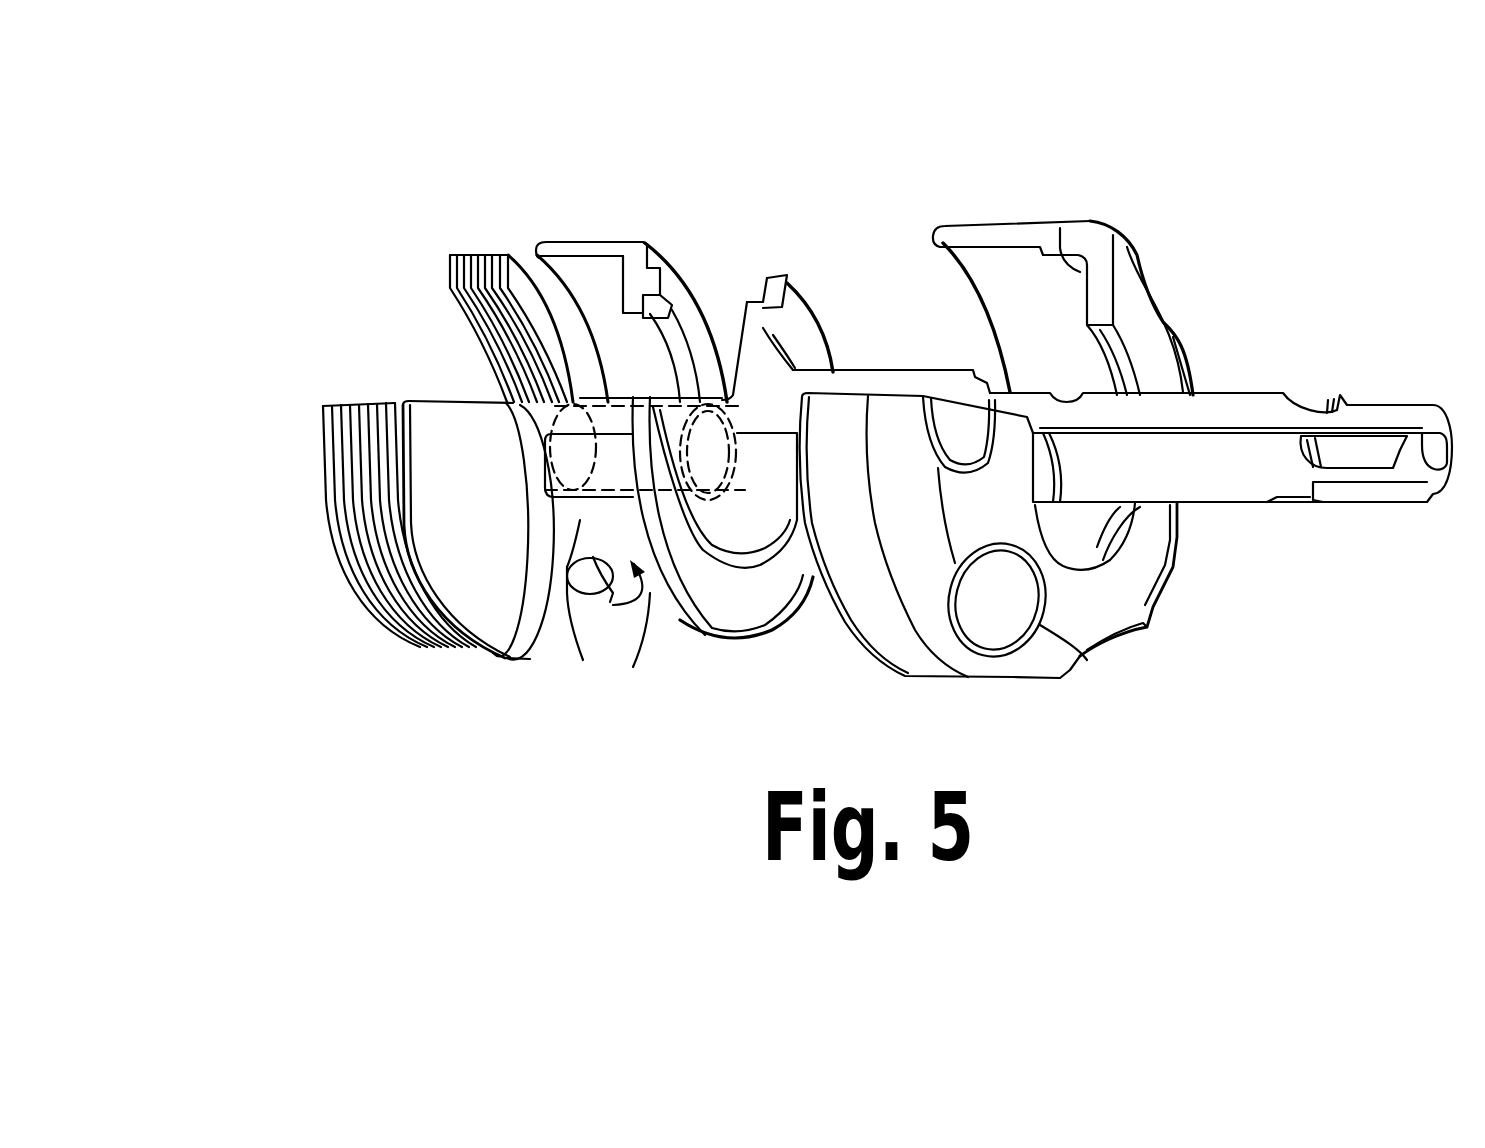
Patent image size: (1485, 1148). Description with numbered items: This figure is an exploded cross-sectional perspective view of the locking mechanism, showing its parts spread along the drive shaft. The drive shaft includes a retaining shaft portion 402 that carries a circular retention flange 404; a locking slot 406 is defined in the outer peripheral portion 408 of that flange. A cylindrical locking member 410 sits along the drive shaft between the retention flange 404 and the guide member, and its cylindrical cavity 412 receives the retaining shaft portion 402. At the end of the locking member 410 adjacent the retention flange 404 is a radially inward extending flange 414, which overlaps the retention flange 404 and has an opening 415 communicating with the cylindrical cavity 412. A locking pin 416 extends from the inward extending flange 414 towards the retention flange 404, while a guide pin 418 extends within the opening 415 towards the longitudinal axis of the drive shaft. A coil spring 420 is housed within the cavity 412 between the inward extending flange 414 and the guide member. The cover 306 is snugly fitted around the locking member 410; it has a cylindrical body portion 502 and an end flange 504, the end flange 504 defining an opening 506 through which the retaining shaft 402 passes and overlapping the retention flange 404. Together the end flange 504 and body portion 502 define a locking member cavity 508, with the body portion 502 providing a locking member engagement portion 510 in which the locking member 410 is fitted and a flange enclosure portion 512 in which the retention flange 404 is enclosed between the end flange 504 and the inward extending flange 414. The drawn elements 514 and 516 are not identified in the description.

The cover 306 is at (997, 225).
The retaining shaft portion 402 is at (895, 368).
The retention flange 404 is at (755, 608).
The locking slot 406 is at (785, 284).
The outer peripheral portion 408 is at (728, 640).
The locking member 410 is at (572, 243).
The cylindrical cavity 412 is at (463, 357).
The inward extending flange 414 is at (742, 310).
The opening 415 is at (633, 627).
The locking pin 416 is at (692, 324).
The guide pin 418 is at (621, 316).
The coil spring 420 is at (450, 272).
The cylindrical body portion 502 is at (1043, 258).
The end flange 504 is at (1130, 307).
The opening 506 is at (1100, 363).
The locking member cavity 508 is at (1001, 280).
The locking member engagement portion 510 is at (952, 227).
The flange enclosure portion 512 is at (1073, 224).
The aperture 514 is at (1000, 615).
The lobe 516 is at (1058, 663).